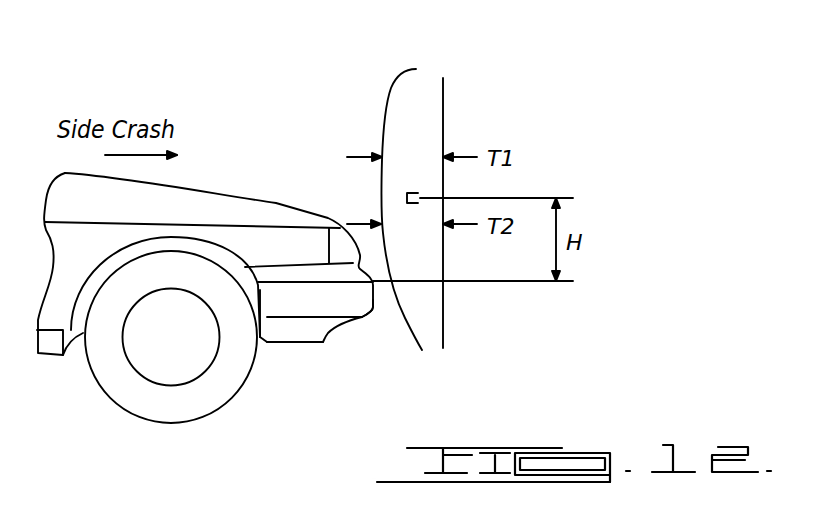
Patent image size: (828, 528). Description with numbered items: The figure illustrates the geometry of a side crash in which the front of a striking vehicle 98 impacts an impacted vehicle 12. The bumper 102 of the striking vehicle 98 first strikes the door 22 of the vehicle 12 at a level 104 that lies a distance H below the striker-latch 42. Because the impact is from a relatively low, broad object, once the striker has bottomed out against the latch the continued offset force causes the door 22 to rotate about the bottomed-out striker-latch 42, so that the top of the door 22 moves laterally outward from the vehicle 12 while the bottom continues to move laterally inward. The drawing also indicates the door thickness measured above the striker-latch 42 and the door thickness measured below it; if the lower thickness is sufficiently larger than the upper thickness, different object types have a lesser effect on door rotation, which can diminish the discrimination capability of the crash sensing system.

The impacted vehicle 12 is at (343, 113).
The door 22 is at (387, 82).
The striker-latch 42 is at (407, 198).
The striking vehicle 98 is at (280, 344).
The bumper 102 is at (375, 310).
The level 104 is at (508, 282).